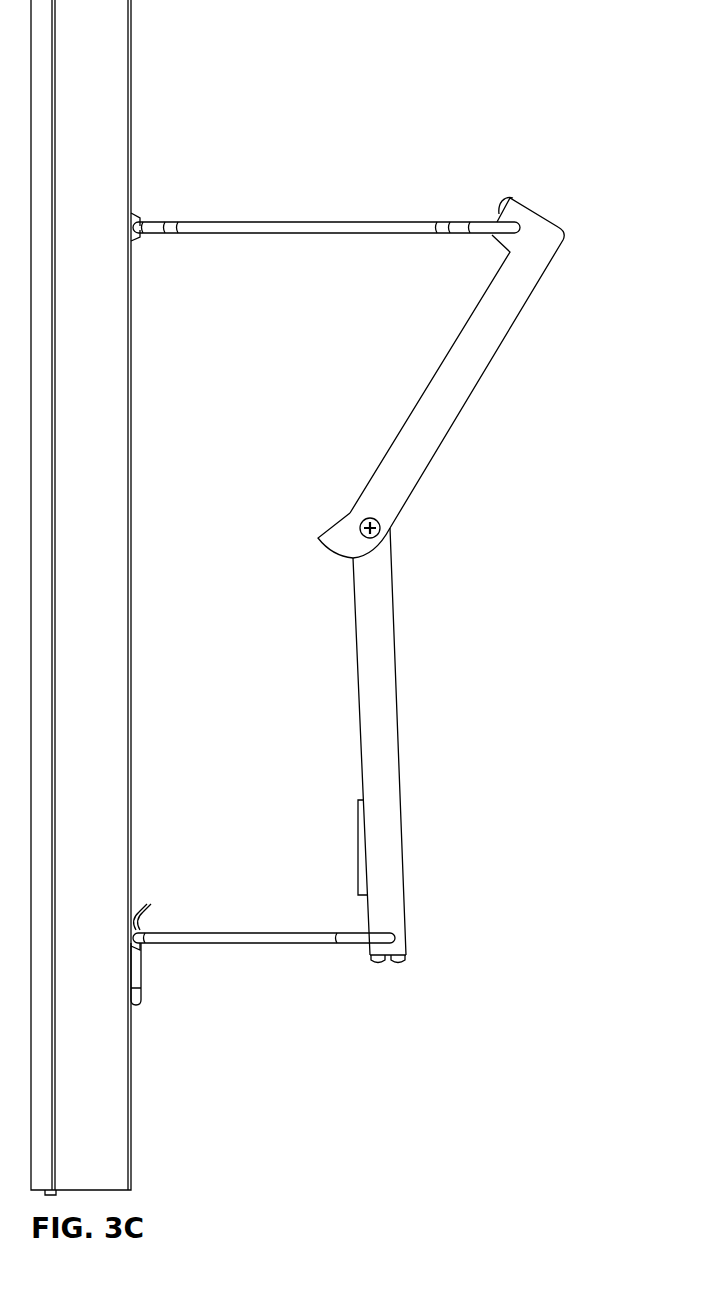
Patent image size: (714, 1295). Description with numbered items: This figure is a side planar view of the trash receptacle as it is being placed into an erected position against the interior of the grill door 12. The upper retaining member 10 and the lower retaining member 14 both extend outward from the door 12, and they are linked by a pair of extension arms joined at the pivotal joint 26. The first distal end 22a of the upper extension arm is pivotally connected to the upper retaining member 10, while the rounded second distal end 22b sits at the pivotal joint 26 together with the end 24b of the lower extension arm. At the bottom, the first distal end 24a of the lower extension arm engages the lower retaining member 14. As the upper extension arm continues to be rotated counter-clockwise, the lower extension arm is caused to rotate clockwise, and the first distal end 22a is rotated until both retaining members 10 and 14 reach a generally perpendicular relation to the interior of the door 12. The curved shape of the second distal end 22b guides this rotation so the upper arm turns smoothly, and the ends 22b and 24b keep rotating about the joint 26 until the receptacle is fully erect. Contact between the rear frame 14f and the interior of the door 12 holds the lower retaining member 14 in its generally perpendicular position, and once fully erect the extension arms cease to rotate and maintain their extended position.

The grill door 12 is at (132, 8).
The upper retaining member 10 is at (345, 222).
The first distal end of the upper extension arm 22a is at (537, 211).
The second distal end of the upper extension arm 22b is at (327, 533).
The pivotal joint 26 is at (386, 527).
The end of the lower extension arm 24b is at (392, 565).
The first distal end of the lower extension arm 24a is at (405, 952).
The lower retaining member 14 is at (232, 933).
The rear frame 14f is at (140, 998).